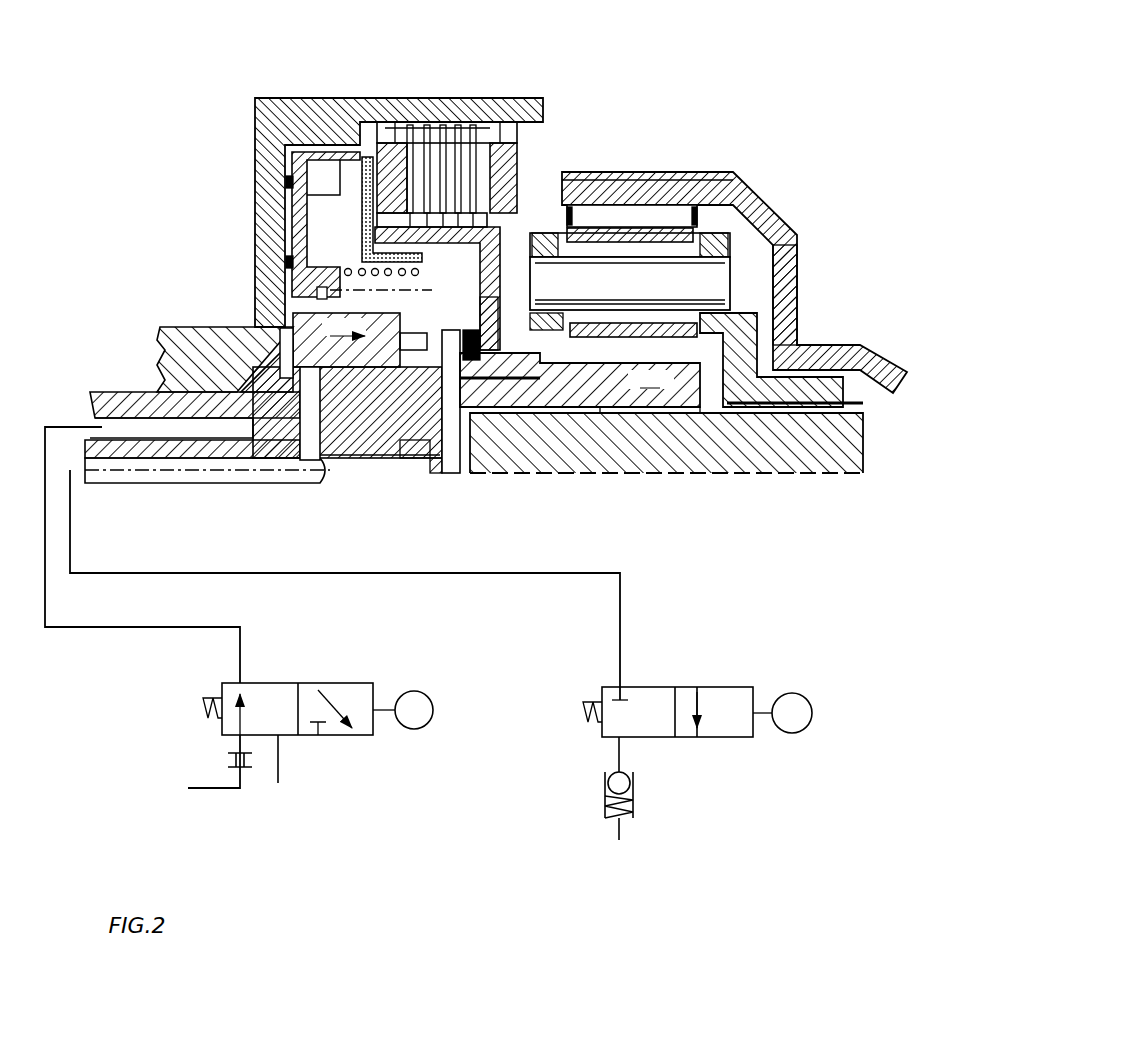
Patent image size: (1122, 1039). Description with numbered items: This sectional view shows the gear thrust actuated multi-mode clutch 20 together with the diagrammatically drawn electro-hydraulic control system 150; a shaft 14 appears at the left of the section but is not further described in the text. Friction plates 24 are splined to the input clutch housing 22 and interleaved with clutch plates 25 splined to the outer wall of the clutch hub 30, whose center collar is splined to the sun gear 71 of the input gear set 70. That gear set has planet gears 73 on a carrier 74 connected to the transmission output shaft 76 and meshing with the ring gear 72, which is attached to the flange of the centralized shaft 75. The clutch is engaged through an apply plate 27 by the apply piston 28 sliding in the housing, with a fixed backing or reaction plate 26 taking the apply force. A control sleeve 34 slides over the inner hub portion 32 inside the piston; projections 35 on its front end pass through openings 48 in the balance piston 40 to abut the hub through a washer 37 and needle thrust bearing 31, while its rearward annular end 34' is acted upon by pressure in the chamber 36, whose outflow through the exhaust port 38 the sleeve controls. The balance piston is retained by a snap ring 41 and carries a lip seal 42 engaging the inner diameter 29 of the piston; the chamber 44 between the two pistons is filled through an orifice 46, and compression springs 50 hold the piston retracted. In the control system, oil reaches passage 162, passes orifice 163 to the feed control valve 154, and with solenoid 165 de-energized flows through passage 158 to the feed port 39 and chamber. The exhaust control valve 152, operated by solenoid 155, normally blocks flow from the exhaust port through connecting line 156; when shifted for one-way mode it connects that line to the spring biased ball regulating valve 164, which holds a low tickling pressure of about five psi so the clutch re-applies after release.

The shaft 14 is at (125, 395).
The gear thrust actuated multi-mode clutch 20 is at (569, 74).
The input clutch housing 22 is at (253, 307).
The friction plates 24 is at (423, 100).
The clutch plates 25 is at (453, 100).
The backing or reaction plate 26 is at (517, 100).
The apply plate 27 is at (393, 100).
The apply piston 28 is at (253, 237).
The inner diameter 29 is at (340, 165).
The clutch hub 30 is at (492, 378).
The needle thrust bearing 31 is at (482, 343).
The inner hub portion 32 is at (397, 458).
The control sleeve 34 is at (341, 431).
The rearward annular end 34' is at (224, 342).
The projections 35 is at (495, 305).
The clutch control fluid pressure chamber 36 is at (253, 267).
The washer 37 is at (447, 440).
The exhaust port 38 is at (305, 482).
The feed port 39 is at (163, 327).
The balance piston 40 is at (253, 210).
The snap ring 41 is at (413, 473).
The lip seal 42 is at (368, 100).
The chamber 44 is at (253, 270).
The orifice 46 is at (252, 183).
The openings 48 is at (425, 326).
The compression springs 50 is at (420, 297).
The input gear set 70 is at (772, 182).
The sun gear 71 is at (605, 392).
The ring gear 72 is at (618, 180).
The planet gears 73 is at (653, 223).
The carrier 74 is at (743, 343).
The centralized shaft 75 is at (787, 262).
The transmission output shaft 76 is at (705, 453).
The electro-hydraulic control system 150 is at (759, 630).
The exhaust control valve 152 is at (724, 757).
The feed control valve 154 is at (347, 757).
The solenoid 155 is at (812, 713).
The connecting line 156 is at (481, 576).
The passage 158 is at (128, 627).
The passage 162 is at (205, 788).
The orifice 163 is at (225, 758).
The spring biased ball regulating valve 164 is at (573, 850).
The solenoid 165 is at (433, 710).